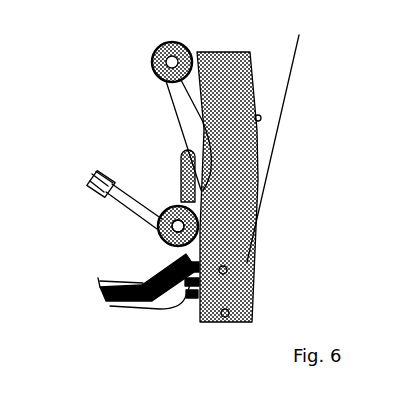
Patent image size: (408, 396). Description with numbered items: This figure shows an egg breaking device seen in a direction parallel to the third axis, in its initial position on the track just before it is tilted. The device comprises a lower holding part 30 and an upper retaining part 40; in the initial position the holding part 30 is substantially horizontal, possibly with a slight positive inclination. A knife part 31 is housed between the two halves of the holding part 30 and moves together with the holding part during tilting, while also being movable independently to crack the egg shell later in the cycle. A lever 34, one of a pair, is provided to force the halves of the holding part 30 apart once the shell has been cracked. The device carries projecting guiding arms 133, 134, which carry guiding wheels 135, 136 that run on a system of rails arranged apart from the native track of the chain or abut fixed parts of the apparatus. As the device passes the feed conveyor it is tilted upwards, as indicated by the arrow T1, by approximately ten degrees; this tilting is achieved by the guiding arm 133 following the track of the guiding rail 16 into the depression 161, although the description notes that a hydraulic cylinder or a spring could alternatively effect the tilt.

The guiding rail 16 is at (228, 185).
The depression 161 is at (210, 165).
The guiding arm 133 is at (191, 121).
The guiding arm 134 is at (207, 202).
The guiding wheel 135 is at (194, 54).
The guiding wheel 136 is at (154, 217).
The lever 34 is at (182, 160).
The retaining part 40 is at (74, 180).
The holding part 30 is at (102, 305).
The knife part 31 is at (142, 310).
The arrow indicating upward tilting T1 is at (71, 250).